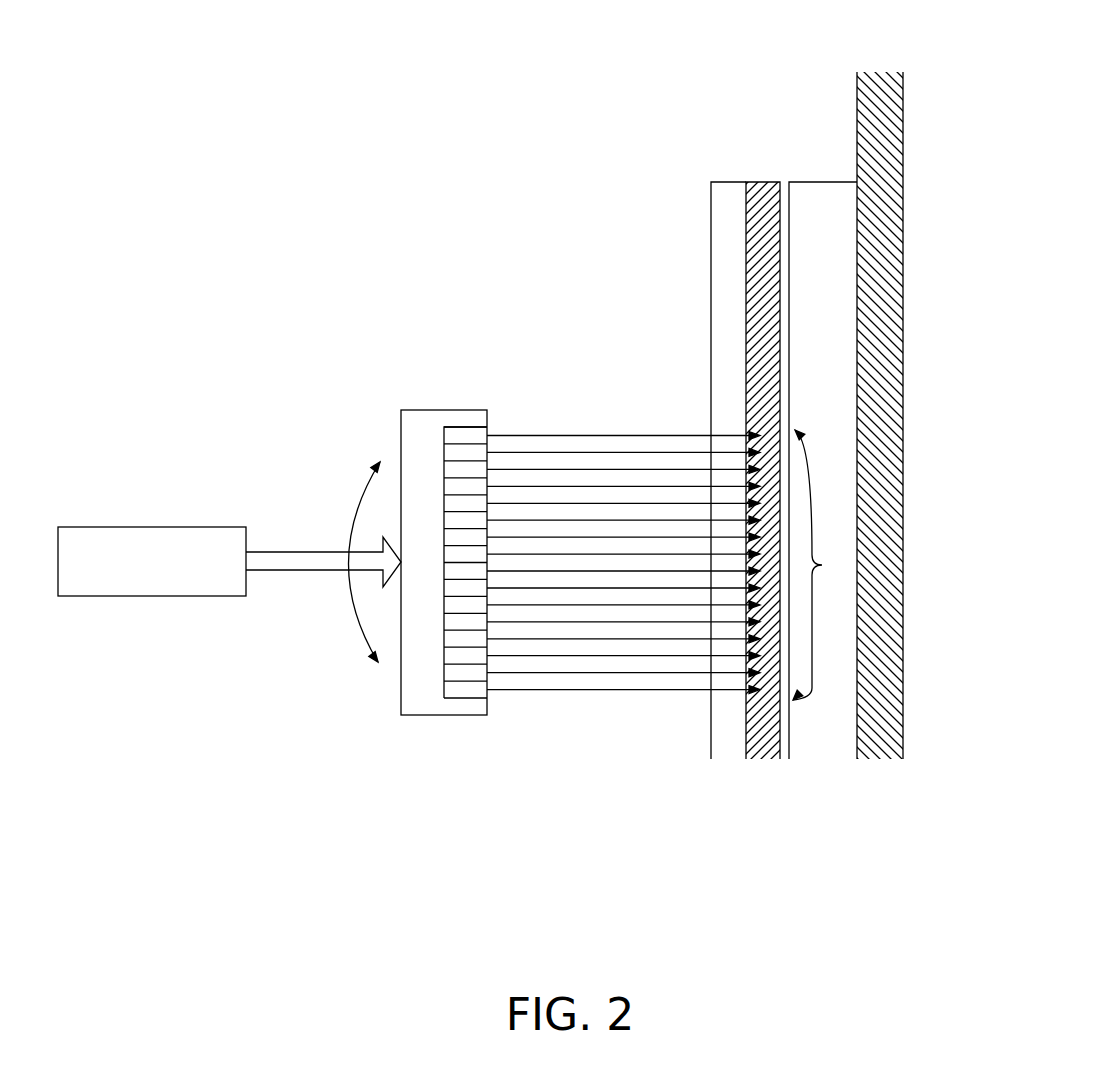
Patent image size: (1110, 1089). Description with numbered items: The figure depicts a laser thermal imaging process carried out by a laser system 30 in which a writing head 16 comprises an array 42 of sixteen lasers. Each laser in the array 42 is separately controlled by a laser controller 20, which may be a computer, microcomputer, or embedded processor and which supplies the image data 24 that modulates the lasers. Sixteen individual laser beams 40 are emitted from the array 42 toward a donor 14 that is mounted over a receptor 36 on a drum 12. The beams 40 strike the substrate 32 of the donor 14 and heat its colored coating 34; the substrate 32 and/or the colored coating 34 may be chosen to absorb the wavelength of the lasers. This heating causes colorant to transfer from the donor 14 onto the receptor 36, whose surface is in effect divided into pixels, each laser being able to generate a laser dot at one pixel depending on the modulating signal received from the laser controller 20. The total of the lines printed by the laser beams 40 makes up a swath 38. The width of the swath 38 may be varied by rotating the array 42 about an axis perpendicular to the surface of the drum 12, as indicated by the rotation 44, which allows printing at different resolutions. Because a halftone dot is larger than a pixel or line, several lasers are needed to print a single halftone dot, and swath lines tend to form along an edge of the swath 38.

The drum 12 is at (880, 415).
The donor 14 is at (746, 421).
The writing head 16 is at (408, 574).
The laser controller 20 is at (152, 561).
The image data 24 is at (280, 571).
The laser system 30 is at (398, 514).
The substrate 32 is at (728, 181).
The colored coating 34 is at (762, 181).
The receptor 36 is at (828, 211).
The swath 38 is at (824, 565).
The laser beams 40 is at (606, 704).
The array 42 is at (462, 427).
The rotation of array 44 is at (355, 509).